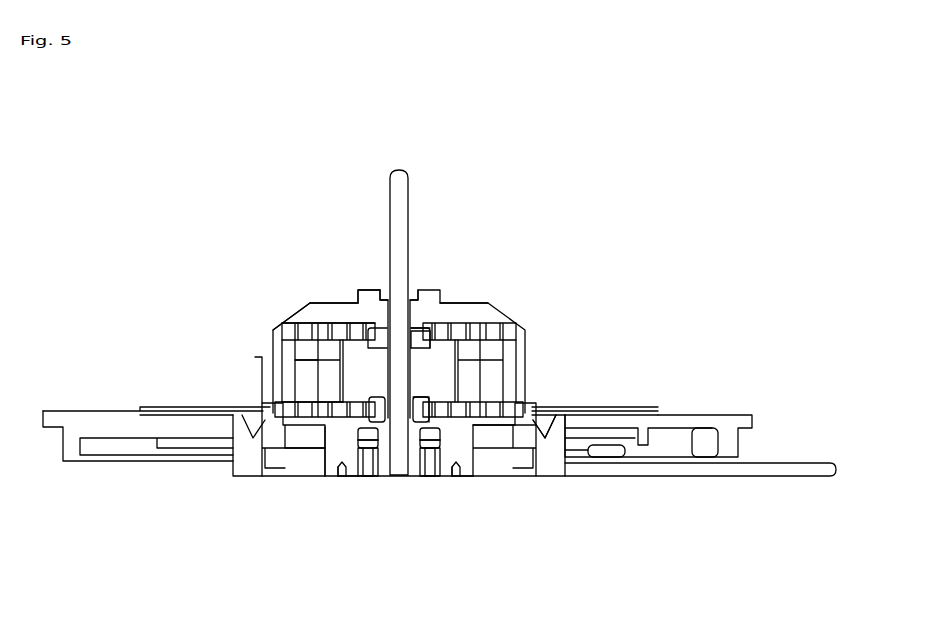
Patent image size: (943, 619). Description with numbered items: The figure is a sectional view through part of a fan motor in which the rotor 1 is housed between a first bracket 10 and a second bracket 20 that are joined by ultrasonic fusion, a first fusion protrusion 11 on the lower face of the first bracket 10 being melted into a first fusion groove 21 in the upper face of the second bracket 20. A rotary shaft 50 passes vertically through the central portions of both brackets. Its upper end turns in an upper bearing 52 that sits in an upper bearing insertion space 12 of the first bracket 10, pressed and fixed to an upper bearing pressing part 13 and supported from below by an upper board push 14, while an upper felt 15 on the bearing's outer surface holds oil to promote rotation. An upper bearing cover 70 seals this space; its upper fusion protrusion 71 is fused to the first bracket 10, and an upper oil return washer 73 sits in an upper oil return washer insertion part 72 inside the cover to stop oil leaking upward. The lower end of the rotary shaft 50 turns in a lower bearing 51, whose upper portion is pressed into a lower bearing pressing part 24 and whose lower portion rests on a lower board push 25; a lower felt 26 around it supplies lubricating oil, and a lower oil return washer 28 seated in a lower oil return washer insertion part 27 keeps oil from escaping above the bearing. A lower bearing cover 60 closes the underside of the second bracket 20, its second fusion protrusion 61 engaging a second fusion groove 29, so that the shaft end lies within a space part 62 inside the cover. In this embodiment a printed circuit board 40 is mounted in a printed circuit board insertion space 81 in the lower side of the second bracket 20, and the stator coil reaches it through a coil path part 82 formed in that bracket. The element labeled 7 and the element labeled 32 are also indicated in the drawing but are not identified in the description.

The rotor 1 is at (350, 358).
The coil 7 is at (297, 370).
The first bracket 10 is at (525, 345).
The first fusion protrusion 11 is at (560, 407).
The upper bearing insertion space 12 is at (430, 315).
The upper bearing pressing part 13 is at (418, 300).
The upper board push 14 is at (345, 300).
The upper felt 15 is at (425, 300).
The second bracket 20 is at (240, 470).
The first fusion groove 21 is at (245, 412).
The lower bearing pressing part 24 is at (425, 480).
The lower board push 25 is at (440, 480).
The lower felt 26 is at (358, 432).
The lower oil return washer insertion part 27 is at (360, 480).
The lower oil return washer 28 is at (467, 422).
The second fusion groove 29 is at (312, 480).
The insulator 32 is at (310, 310).
The printed circuit board 40 is at (537, 452).
The rotary shaft 50 is at (399, 165).
The lower bearing 51 is at (390, 480).
The upper bearing 52 is at (380, 287).
The lower bearing cover 60 is at (380, 480).
The second fusion protrusion 61 is at (470, 480).
The space part 62 is at (405, 480).
The upper bearing cover 70 is at (297, 307).
The upper fusion protrusion 71 is at (445, 318).
The upper oil return washer insertion part 72 is at (335, 305).
The upper oil return washer 73 is at (365, 289).
The printed circuit board insertion space 81 is at (243, 480).
The coil path part 82 is at (545, 428).